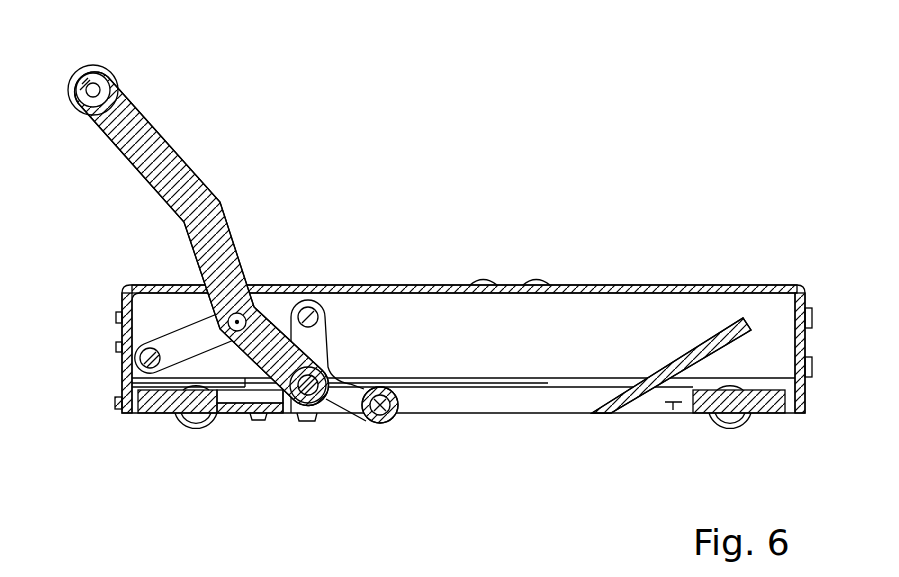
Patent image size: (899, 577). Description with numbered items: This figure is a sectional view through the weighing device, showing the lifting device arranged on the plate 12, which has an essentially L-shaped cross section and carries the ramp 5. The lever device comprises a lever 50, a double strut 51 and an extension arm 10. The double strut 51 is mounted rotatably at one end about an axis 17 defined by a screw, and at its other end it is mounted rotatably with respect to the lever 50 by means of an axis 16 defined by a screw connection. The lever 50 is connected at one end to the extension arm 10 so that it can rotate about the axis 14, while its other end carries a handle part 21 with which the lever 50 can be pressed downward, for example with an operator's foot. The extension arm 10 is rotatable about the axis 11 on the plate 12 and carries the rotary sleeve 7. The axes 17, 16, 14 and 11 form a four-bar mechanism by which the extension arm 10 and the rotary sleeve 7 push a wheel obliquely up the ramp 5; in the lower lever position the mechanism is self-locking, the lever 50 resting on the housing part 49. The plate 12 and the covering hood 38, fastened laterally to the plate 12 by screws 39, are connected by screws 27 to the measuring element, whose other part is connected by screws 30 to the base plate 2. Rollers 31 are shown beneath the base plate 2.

The base plate 2 is at (763, 403).
The ramp 5 is at (640, 403).
The rotary sleeve 7 is at (388, 418).
The extension arm 10 is at (320, 340).
The axis 11 is at (312, 310).
The plate 12 is at (708, 312).
The axis 14 is at (312, 395).
The axis 16 is at (237, 322).
The axis 17 is at (150, 358).
The handle part 21 is at (75, 102).
The screws 27 is at (541, 280).
The screws 30 is at (305, 421).
The roller 31 is at (193, 432).
The covering hood 38 is at (277, 285).
The screws 39 is at (117, 315).
The housing part 49 is at (123, 284).
The lever 50 is at (158, 155).
The double strut 51 is at (175, 342).